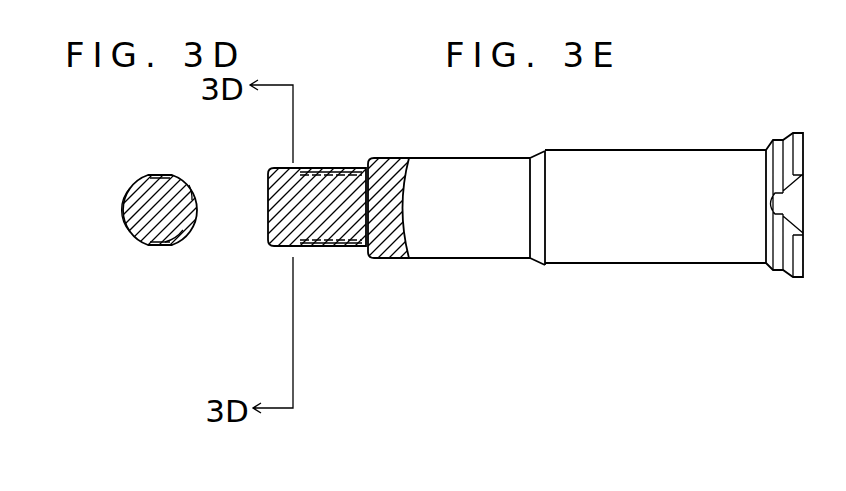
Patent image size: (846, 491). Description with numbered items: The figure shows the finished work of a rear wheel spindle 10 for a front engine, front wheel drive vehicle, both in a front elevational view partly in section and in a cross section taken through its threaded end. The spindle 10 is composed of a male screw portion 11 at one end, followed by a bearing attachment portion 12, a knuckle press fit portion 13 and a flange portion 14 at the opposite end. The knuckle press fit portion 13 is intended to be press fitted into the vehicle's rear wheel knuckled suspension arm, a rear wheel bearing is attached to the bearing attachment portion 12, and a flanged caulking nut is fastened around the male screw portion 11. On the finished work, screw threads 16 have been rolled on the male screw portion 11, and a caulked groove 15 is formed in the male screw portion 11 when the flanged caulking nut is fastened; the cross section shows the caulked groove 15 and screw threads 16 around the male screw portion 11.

In FIG. 3E, the rear wheel spindle 10 is at (722, 122).
In FIG. 3E, the male screw portion 11 is at (342, 248).
In FIG. 3E, the bearing attachment portion 12 is at (473, 245).
In FIG. 3E, the knuckle press fit portion 13 is at (663, 242).
In FIG. 3E, the flange portion 14 is at (803, 268).
In FIG. 3D, the caulked groove 15 is at (158, 173).
In FIG. 3E, the caulked groove 15 is at (295, 168).
In FIG. 3D, the screw threads 16 is at (127, 233).
In FIG. 3E, the screw threads 16 is at (315, 253).